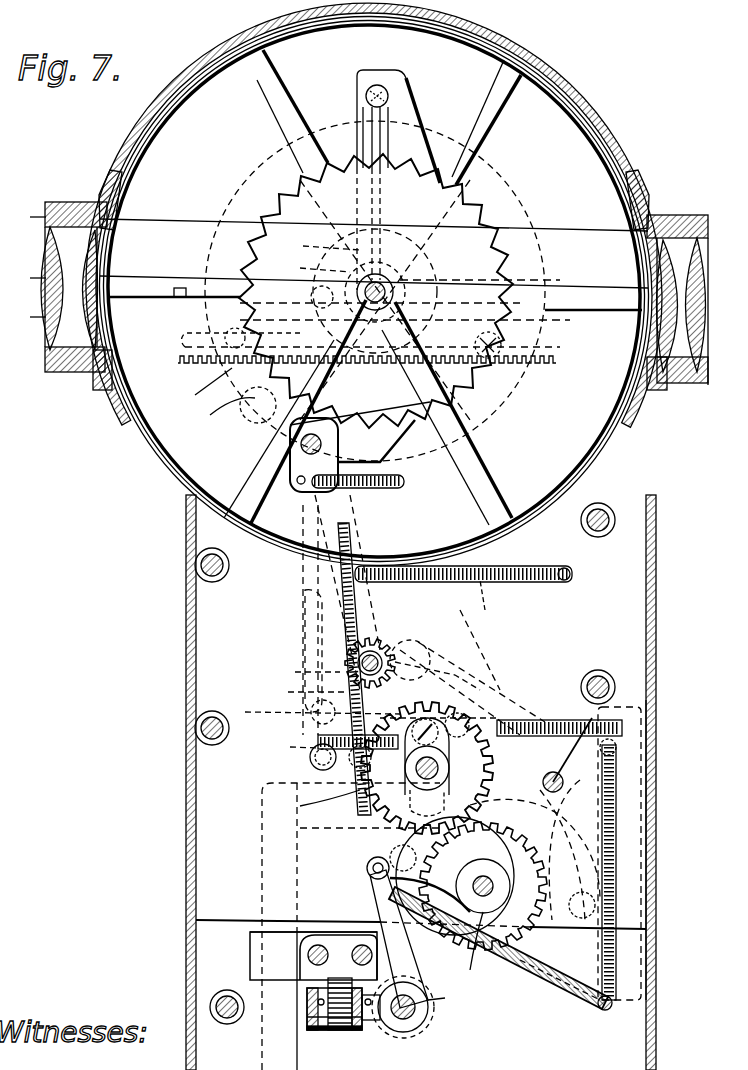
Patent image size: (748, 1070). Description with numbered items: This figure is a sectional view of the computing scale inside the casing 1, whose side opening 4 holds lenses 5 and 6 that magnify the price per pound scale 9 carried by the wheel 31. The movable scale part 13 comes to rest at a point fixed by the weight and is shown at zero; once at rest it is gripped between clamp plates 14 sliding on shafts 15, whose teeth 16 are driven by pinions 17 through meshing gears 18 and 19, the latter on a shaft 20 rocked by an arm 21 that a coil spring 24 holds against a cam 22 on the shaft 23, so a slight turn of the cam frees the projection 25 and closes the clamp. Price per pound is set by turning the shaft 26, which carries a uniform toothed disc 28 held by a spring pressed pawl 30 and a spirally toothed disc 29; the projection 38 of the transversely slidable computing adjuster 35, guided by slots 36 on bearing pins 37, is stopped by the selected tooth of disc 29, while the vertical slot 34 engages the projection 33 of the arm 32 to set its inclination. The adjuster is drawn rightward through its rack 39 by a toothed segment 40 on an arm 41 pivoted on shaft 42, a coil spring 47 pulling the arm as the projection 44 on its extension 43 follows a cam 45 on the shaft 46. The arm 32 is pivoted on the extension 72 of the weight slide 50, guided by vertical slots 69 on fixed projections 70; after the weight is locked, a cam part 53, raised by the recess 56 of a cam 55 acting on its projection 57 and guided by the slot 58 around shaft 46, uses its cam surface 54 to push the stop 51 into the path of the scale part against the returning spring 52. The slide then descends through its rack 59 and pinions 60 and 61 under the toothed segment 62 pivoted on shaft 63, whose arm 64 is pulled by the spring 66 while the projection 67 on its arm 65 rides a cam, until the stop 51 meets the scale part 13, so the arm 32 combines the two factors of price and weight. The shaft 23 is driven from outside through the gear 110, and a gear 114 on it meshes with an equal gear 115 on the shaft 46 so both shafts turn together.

The casing 1 is at (186, 612).
The side opening 4 is at (45, 212).
The lens 5 is at (45, 312).
The lens 6 is at (42, 276).
The price per pound scale 9 is at (228, 62).
The movable scale part 13 is at (262, 825).
The clamp plates 14 is at (322, 945).
The shafts 15 is at (362, 945).
The teeth 16 is at (330, 966).
The pinions 17 is at (338, 1030).
The gear 18 is at (375, 1025).
The gear 19 is at (396, 1030).
The shaft 20 is at (412, 1020).
The arm 21 is at (410, 962).
The cam 22 is at (395, 850).
The shaft 23 is at (485, 958).
The coil spring 24 is at (540, 990).
The projection 25 is at (367, 868).
The shaft 26 is at (383, 285).
The disc 28 is at (274, 215).
The disc 29 is at (200, 290).
The spring pressed pawl 30 is at (385, 445).
The wheel 31 is at (258, 82).
The arm 32 is at (472, 83).
The projection 33 is at (405, 78).
The vertical slot 34 is at (410, 240).
The computing adjuster 35 is at (500, 340).
The slots 36 is at (182, 364).
The bearing pins 37 is at (500, 348).
The projection 38 is at (175, 298).
The rack 39 is at (198, 390).
The toothed segment 40 is at (217, 413).
The arm 41 is at (360, 528).
The shaft 42 is at (380, 655).
The extension 43 is at (470, 678).
The projection 44 is at (490, 705).
The cam 45 is at (490, 760).
The shaft 46 is at (438, 768).
The coil spring 47 is at (489, 597).
The weight slide 50 is at (300, 588).
The movable stop 51 is at (313, 754).
The returning spring 52 is at (318, 736).
The cam part 53 is at (370, 832).
The cam surface 54 is at (262, 795).
The cam 55 is at (572, 922).
The cam recess 56 is at (483, 886).
The projection 57 is at (535, 819).
The slot 58 is at (431, 792).
The rack 59 is at (298, 705).
The pinion 60 is at (318, 650).
The pinion 61 is at (299, 672).
The toothed segment 62 is at (435, 646).
The shaft 63 is at (501, 728).
The arm 64 is at (619, 851).
The arm 65 is at (591, 872).
The spring 66 is at (605, 842).
The projection 67 is at (572, 980).
The vertical slots 69 is at (282, 622).
The projections 70 is at (310, 295).
The extension 72 is at (308, 266).
The gear 110 is at (660, 752).
The gear 114 is at (452, 1010).
The gear 115 is at (330, 805).